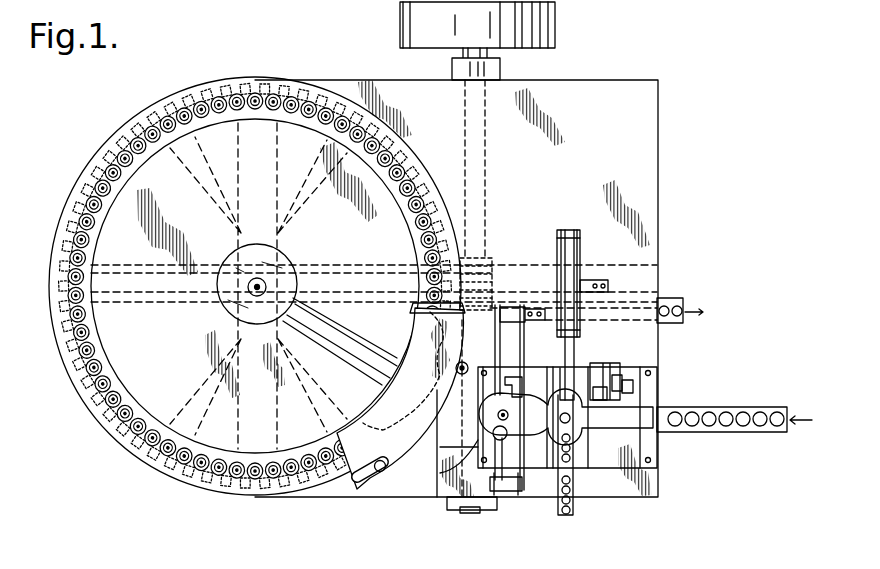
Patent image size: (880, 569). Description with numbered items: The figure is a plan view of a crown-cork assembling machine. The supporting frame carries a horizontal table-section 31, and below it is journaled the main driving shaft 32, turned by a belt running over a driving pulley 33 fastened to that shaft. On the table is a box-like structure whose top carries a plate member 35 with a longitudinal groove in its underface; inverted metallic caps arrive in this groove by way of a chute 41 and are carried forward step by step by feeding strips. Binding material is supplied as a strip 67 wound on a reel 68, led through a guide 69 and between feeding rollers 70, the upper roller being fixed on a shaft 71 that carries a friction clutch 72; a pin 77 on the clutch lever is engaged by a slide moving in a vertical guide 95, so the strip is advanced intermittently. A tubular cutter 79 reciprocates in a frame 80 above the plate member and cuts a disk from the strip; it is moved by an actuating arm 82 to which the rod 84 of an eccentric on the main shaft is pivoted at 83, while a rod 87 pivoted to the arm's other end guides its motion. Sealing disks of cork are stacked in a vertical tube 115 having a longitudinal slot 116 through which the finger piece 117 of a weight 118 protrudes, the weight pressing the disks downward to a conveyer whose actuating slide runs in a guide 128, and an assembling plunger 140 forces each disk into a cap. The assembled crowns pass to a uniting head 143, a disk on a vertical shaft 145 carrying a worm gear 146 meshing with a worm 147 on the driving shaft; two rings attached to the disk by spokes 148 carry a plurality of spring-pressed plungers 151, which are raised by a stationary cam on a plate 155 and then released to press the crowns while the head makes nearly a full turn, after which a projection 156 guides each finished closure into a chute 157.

The table-section 31 is at (658, 125).
The main driving shaft 32 is at (490, 54).
The driving pulley 33 is at (555, 25).
The plate member 35 is at (628, 449).
The chute 41 is at (740, 405).
The strip 67 is at (575, 352).
The reel 68 is at (580, 252).
The guide 69 is at (605, 372).
The feeding rollers 70 is at (560, 378).
The shaft 71 is at (630, 368).
The friction clutch 72 is at (636, 384).
The pin 77 is at (620, 400).
The tubular cutter 79 is at (560, 440).
The frame 80 is at (610, 430).
The actuating arm 82 is at (522, 480).
The pivot 83 is at (480, 497).
The rod 84 is at (505, 500).
The rod 87 is at (511, 324).
The vertical guide 95 is at (582, 420).
The vertical tube 115 is at (445, 486).
The longitudinal slot 116 is at (480, 440).
The finger piece 117 is at (508, 433).
The weight 118 is at (519, 413).
The guide 128 is at (505, 380).
The assembling plunger 140 is at (440, 368).
The uniting head 143 is at (105, 362).
The vertical shaft 145 is at (278, 283).
The worm gear 146 is at (415, 180).
The worm 147 is at (480, 263).
The spokes 148 is at (186, 388).
The plungers 151 is at (425, 225).
The plate 155 is at (425, 325).
The projection 156 is at (405, 315).
The chute 157 is at (684, 300).